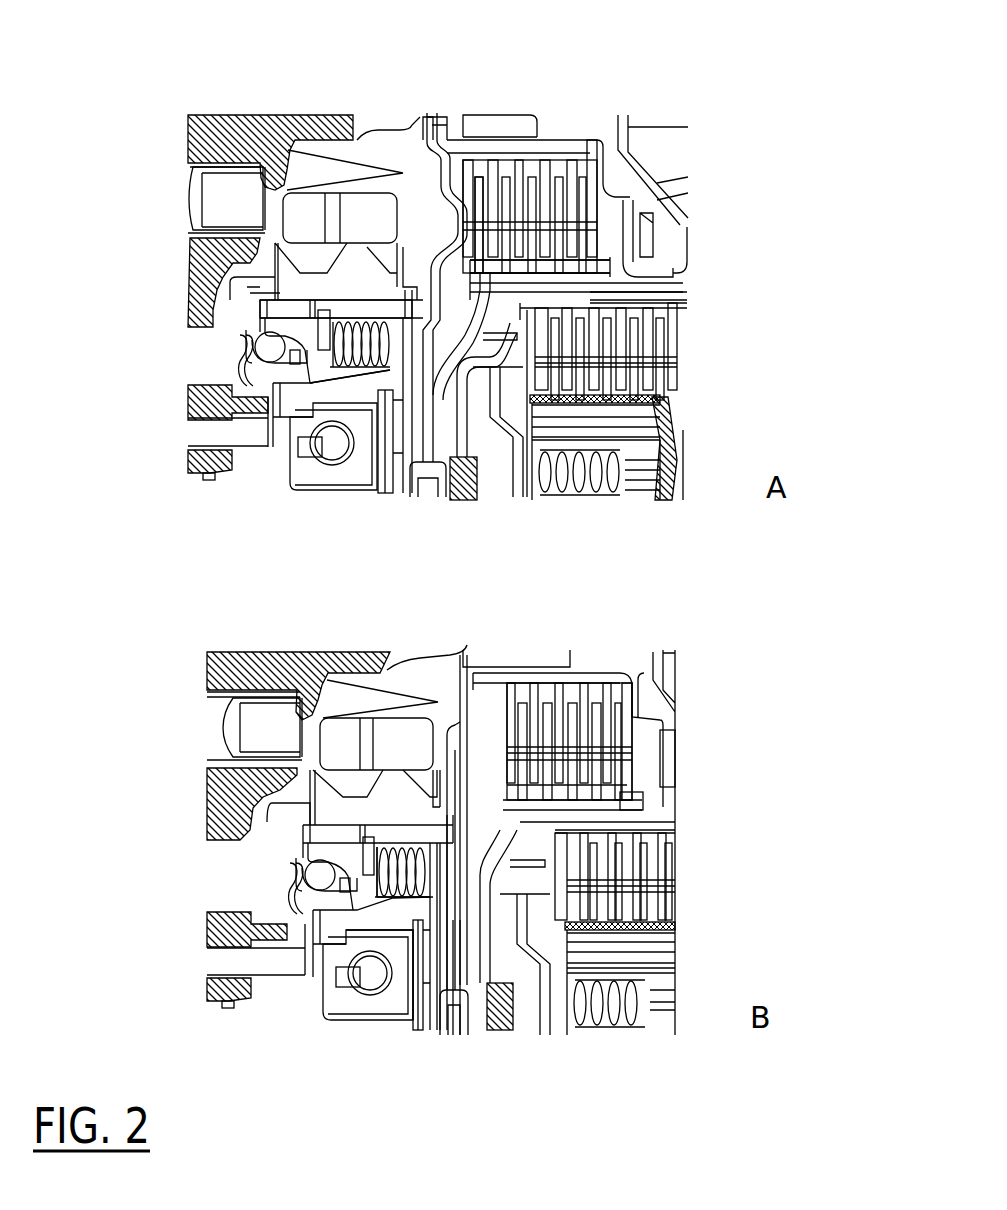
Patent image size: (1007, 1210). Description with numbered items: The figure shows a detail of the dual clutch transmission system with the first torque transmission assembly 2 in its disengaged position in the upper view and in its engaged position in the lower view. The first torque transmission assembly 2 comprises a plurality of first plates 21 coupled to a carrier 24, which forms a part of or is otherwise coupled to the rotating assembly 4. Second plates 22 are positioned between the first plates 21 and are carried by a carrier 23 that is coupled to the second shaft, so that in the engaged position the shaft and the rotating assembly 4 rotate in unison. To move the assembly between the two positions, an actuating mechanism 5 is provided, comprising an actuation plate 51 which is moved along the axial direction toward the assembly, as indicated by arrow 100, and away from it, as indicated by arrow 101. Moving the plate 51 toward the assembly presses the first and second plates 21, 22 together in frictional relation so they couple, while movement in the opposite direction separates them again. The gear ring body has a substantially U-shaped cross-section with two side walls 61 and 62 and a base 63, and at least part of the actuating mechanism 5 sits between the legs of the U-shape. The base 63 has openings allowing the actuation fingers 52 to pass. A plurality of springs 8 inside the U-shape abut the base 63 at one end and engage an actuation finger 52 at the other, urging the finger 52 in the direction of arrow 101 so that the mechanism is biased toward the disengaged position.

The first torque transmission assembly 2 is at (697, 103).
The rotating assembly 4 is at (557, 150).
The actuating mechanism 5 is at (323, 377).
The spring 8 is at (395, 880).
The first plates 21 is at (463, 190).
The second plates 22 is at (582, 248).
The carrier 23 is at (592, 283).
The carrier 24 is at (485, 150).
The actuation plate 51 is at (433, 243).
The actuation finger 52 is at (283, 302).
The side wall 61 is at (385, 808).
The side wall 62 is at (380, 923).
The base 63 is at (447, 893).
The arrow 100 is at (822, 388).
The arrow 101 is at (830, 856).